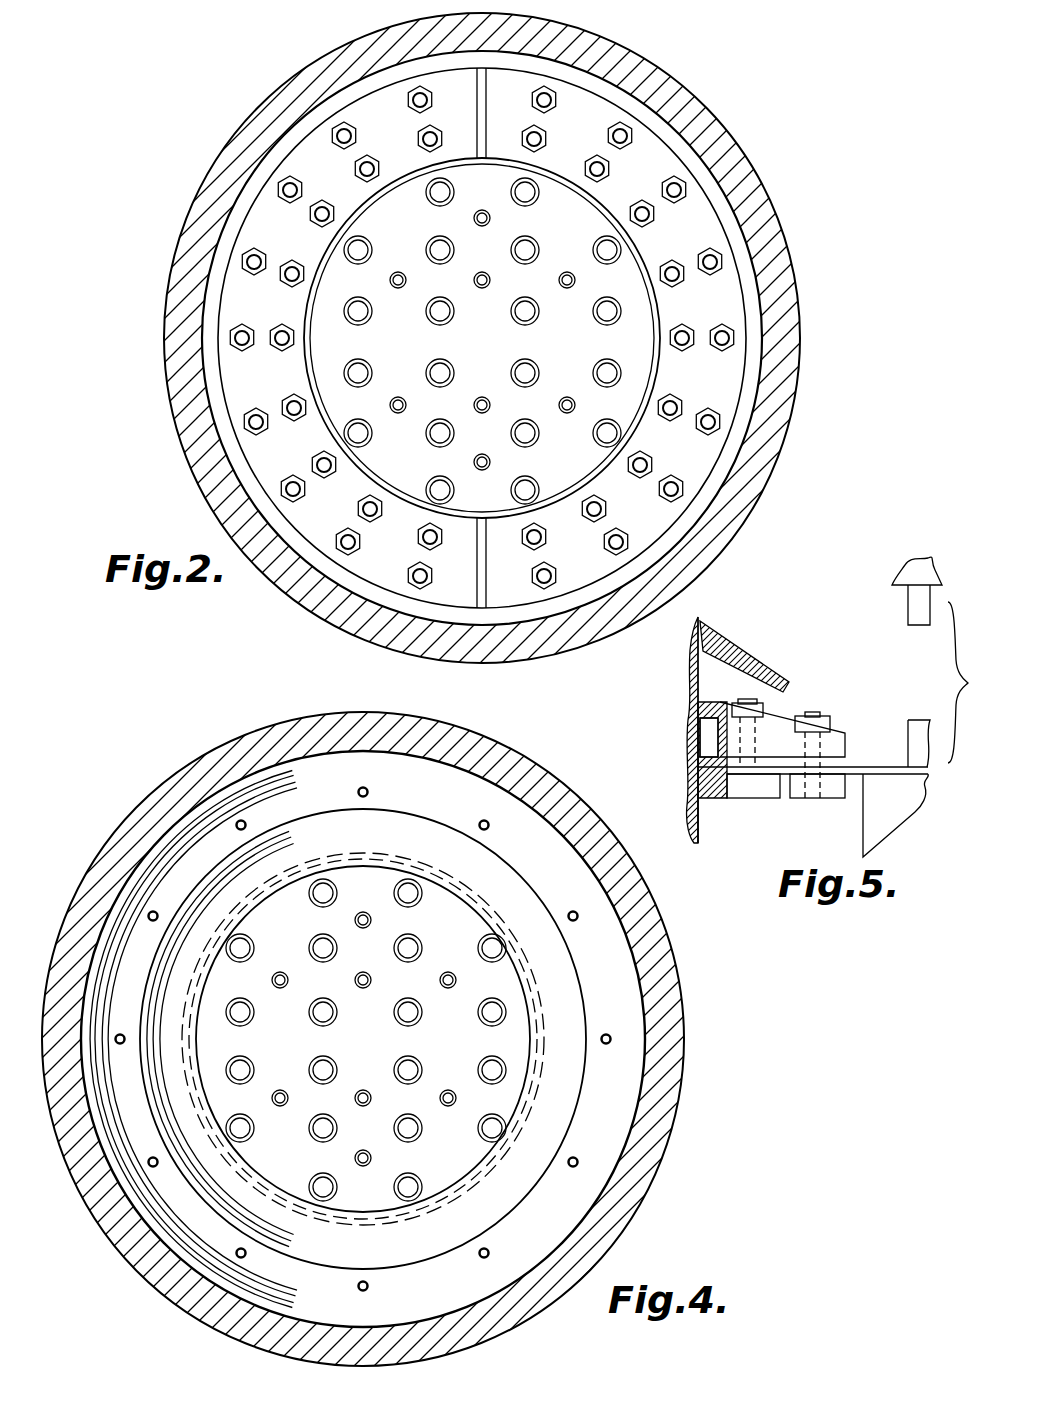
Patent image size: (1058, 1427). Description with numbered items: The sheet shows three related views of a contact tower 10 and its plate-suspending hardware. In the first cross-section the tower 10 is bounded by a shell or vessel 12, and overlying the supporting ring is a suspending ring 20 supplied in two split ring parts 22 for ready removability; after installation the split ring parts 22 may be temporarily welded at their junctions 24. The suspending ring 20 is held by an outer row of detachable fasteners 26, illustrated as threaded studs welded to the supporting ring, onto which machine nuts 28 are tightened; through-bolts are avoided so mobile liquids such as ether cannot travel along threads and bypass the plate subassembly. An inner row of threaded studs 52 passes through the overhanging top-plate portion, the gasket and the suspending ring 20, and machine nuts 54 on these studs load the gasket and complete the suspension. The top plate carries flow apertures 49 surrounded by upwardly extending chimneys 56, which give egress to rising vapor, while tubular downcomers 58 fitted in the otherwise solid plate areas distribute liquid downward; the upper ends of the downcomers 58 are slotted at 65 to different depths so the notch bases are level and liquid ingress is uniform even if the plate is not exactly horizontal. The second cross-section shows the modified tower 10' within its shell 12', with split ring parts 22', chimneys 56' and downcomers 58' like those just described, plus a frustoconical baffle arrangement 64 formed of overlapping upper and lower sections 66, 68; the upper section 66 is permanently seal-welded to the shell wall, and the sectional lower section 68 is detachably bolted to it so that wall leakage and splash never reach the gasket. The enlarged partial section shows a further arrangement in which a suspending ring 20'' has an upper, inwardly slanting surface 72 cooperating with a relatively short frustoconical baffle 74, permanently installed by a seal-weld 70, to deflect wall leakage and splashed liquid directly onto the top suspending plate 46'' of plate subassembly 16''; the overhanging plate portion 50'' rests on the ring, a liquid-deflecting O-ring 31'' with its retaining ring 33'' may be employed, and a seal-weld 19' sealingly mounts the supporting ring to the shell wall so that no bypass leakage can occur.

In FIG. 2, the contact tower 10 is at (515, 338).
In FIG. 2, the shell or vessel 12 is at (490, 338).
In FIG. 2, the suspending ring 20 is at (438, 320).
In FIG. 2, the split ring parts 22 is at (384, 338).
In FIG. 2, the junctions 24 is at (486, 78).
In FIG. 2, the detachable fasteners 26 is at (408, 101).
In FIG. 2, the machine nuts 28 is at (415, 113).
In FIG. 2, the flow apertures 49 is at (593, 250).
In FIG. 2, the threaded studs 52 is at (361, 180).
In FIG. 2, the machine nuts 54 is at (419, 146).
In FIG. 2, the chimneys 56 is at (482, 400).
In FIG. 4, the chimneys 56 is at (365, 1041).
In FIG. 2, the downcomers 58 is at (508, 340).
In FIG. 2, the slots 65 is at (407, 284).
In FIG. 4, the contact tower 10' is at (397, 1039).
In FIG. 4, the shell or vessel 12' is at (363, 1039).
In FIG. 4, the split ring parts 22' is at (363, 1039).
In FIG. 4, the frustoconical baffle arrangement 64 is at (248, 793).
In FIG. 4, the upper frustoconical baffle section 66 is at (326, 775).
In FIG. 4, the lower frustoconical baffle section 68 is at (492, 870).
In FIG. 4, the chimneys 56' is at (366, 1040).
In FIG. 4, the downcomers 58' is at (364, 1039).
In FIG. 5, the seal-weld 70 is at (702, 621).
In FIG. 5, the inwardly slanting surface 72 is at (783, 718).
In FIG. 5, the frustoconical baffle 74 is at (745, 664).
In FIG. 5, the retaining ring 33'' is at (683, 738).
In FIG. 5, the liquid deflecting O-ring 31'' is at (679, 737).
In FIG. 5, the suspending ring 20'' is at (813, 797).
In FIG. 5, the overhanging plate portion 50'' is at (821, 804).
In FIG. 5, the top suspending plate 46'' is at (898, 740).
In FIG. 5, the plate subassembly 16'' is at (908, 713).
In FIG. 5, the seal-weld 19' is at (669, 810).